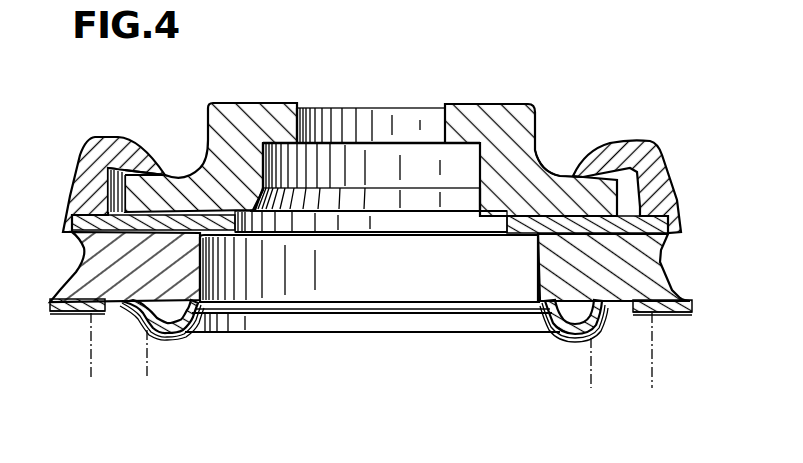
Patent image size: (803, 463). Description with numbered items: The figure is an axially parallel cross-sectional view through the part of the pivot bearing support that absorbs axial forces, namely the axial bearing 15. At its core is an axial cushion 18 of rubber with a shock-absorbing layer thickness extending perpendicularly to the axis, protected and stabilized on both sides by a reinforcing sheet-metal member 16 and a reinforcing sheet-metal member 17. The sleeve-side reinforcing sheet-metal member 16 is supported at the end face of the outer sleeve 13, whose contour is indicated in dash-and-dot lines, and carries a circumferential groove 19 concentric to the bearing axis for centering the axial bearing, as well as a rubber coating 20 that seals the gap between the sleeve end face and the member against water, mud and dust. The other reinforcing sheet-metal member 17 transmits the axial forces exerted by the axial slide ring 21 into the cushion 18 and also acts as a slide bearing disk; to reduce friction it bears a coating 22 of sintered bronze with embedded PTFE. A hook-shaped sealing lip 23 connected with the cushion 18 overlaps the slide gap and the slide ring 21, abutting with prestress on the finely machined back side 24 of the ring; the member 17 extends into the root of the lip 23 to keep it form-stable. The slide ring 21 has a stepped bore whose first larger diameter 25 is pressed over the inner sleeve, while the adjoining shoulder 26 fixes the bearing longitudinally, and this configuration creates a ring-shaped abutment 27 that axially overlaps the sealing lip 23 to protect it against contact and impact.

The axial bearing 15 is at (597, 97).
The abutment 27 is at (527, 114).
The back side 24 is at (573, 176).
The sealing lip 23 is at (654, 157).
The axial cushion 18 is at (92, 263).
The shoulder 26 is at (450, 140).
The first larger diameter 25 is at (480, 170).
The axial slide ring 21 is at (492, 188).
The coating 22 is at (507, 224).
The reinforcing sheet-metal member 17 is at (552, 226).
The outer sleeve 13 is at (590, 362).
The circumferential groove 19 is at (161, 338).
The rubber coating 20 is at (622, 317).
The reinforcing sheet-metal member 16 is at (668, 314).